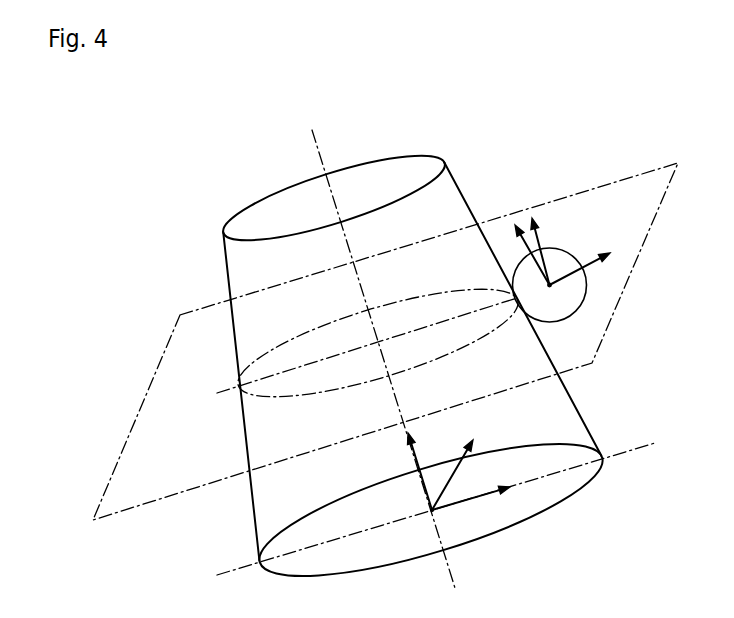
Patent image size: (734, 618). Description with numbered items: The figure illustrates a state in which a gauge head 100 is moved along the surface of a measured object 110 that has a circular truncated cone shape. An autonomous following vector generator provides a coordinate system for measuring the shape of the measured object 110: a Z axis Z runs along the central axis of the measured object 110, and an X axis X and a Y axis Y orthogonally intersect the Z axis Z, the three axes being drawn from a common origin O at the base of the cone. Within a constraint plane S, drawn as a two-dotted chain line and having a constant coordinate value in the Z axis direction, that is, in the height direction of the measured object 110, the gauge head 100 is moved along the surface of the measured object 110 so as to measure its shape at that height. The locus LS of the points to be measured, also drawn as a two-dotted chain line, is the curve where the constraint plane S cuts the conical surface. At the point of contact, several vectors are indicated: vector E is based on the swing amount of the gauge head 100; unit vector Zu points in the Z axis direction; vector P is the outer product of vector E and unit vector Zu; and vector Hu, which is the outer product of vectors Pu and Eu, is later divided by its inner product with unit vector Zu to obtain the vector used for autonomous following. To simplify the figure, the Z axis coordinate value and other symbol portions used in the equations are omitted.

The gauge head 100 is at (578, 295).
The measured object 110 is at (563, 414).
The constraint plane S is at (653, 190).
The locus of points to be measured LS is at (393, 302).
The vector P is at (552, 293).
The vector Hu is at (514, 228).
The unit vector Zu is at (558, 216).
The vector E is at (626, 243).
The origin O is at (428, 520).
The X axis X is at (478, 498).
The Y axis Y is at (458, 468).
The Z axis Z is at (412, 471).